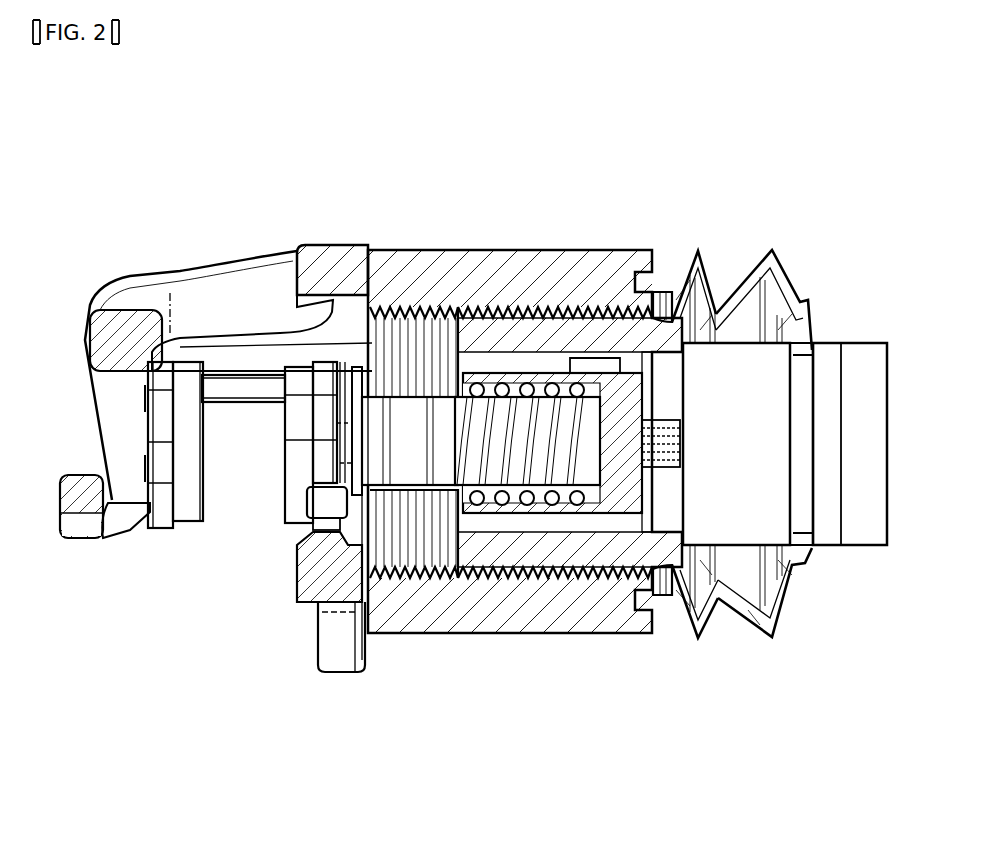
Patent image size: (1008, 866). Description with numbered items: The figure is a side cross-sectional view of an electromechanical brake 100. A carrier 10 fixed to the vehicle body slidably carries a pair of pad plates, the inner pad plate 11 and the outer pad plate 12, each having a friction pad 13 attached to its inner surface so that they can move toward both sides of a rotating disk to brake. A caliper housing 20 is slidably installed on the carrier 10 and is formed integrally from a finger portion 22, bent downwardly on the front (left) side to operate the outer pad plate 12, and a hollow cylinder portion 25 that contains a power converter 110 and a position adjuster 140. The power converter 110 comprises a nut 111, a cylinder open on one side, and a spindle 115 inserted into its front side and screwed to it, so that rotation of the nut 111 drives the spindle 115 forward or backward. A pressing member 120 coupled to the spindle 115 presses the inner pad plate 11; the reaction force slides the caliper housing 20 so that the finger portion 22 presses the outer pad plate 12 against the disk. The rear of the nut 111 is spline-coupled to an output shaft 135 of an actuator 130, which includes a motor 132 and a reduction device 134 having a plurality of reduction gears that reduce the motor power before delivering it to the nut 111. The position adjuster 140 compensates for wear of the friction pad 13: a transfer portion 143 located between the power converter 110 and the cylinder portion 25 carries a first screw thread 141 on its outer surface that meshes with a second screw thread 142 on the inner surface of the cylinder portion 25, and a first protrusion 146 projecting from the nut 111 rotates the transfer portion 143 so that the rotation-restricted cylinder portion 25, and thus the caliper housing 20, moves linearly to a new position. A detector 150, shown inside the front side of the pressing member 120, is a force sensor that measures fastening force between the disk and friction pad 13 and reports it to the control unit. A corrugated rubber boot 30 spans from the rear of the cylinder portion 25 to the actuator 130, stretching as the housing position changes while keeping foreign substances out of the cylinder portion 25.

The electromechanical brake 100 is at (549, 138).
The caliper housing 20 is at (437, 240).
The finger portion 22 is at (105, 408).
The cylinder portion 25 is at (534, 265).
The carrier 10 is at (320, 573).
The inner pad plate 11 is at (323, 417).
The outer pad plate 12 is at (158, 522).
The friction pad 13 is at (295, 455).
The boot 30 is at (770, 256).
The power converter 110 is at (490, 690).
The nut 111 is at (493, 507).
The spindle 115 is at (425, 480).
The pressing member 120 is at (347, 350).
The actuator 130 is at (835, 690).
The motor 132 is at (848, 530).
The reduction device 134 is at (748, 530).
The output shaft 135 is at (660, 445).
The position adjuster 140 is at (620, 332).
The first screw thread 141 is at (483, 308).
The second screw thread 142 is at (388, 310).
The transfer portion 143 is at (690, 264).
The first protrusion 146 is at (598, 368).
The detector 150 is at (343, 453).